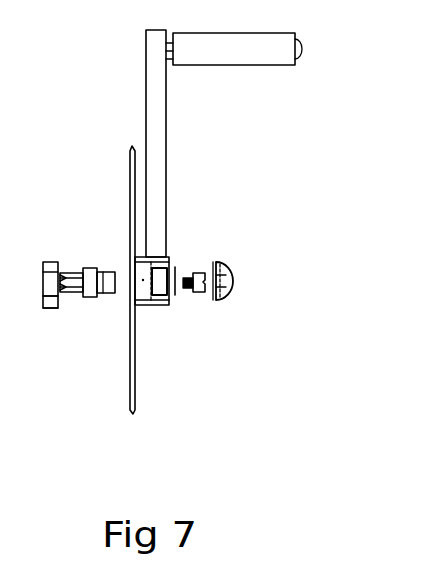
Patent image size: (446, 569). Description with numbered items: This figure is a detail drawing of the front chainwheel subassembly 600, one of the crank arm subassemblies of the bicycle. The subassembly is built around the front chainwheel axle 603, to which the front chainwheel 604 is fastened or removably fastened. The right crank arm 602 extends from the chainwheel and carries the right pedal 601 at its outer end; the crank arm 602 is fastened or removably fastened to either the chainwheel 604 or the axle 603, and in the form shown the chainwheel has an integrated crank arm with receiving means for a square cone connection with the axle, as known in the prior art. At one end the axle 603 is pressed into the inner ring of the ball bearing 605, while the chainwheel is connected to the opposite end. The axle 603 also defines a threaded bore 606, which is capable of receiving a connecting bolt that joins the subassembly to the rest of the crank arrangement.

The front chainwheel subassembly 600 is at (172, 227).
The right pedal 601 is at (253, 70).
The right crank arm 602 is at (172, 140).
The front chainwheel axle 603 is at (100, 262).
The front chainwheel 604 is at (127, 149).
The ball bearing 605 is at (48, 259).
The threaded bore 606 is at (60, 310).